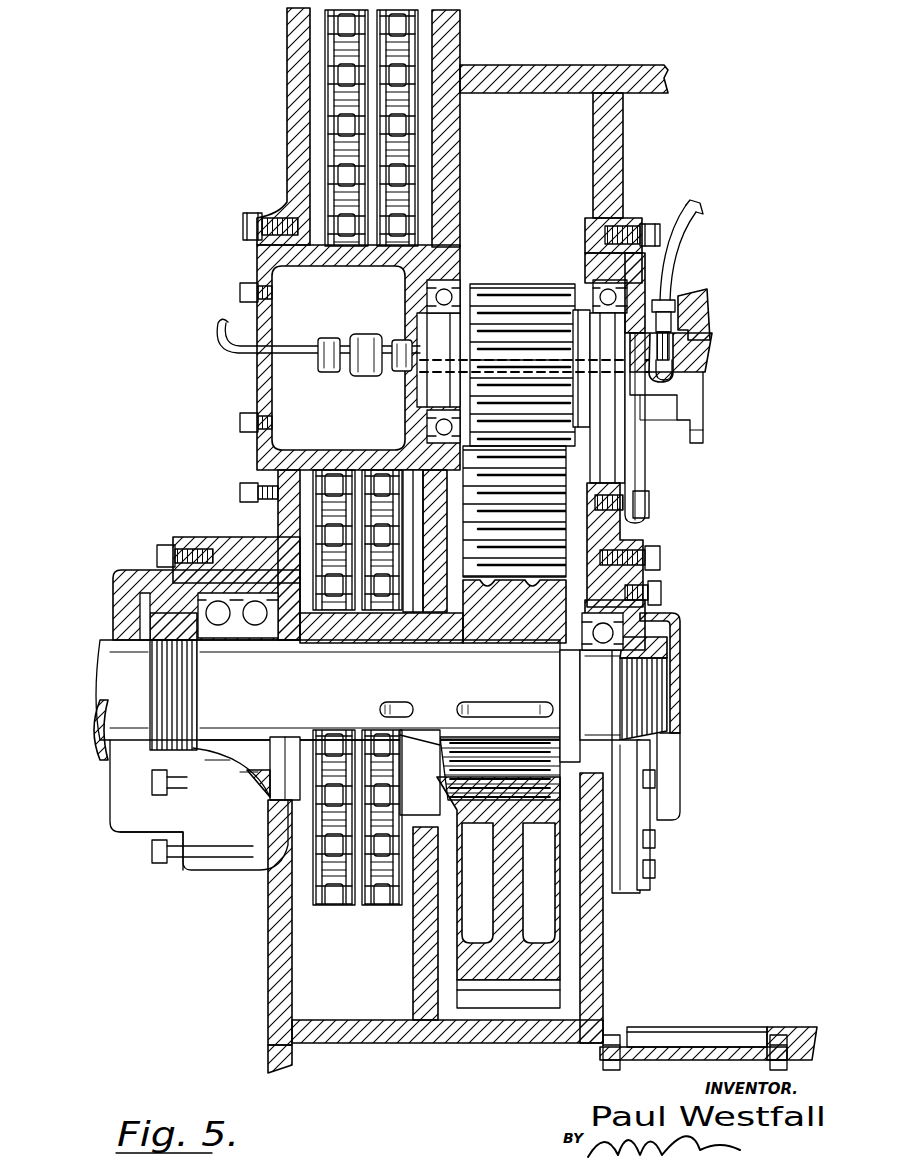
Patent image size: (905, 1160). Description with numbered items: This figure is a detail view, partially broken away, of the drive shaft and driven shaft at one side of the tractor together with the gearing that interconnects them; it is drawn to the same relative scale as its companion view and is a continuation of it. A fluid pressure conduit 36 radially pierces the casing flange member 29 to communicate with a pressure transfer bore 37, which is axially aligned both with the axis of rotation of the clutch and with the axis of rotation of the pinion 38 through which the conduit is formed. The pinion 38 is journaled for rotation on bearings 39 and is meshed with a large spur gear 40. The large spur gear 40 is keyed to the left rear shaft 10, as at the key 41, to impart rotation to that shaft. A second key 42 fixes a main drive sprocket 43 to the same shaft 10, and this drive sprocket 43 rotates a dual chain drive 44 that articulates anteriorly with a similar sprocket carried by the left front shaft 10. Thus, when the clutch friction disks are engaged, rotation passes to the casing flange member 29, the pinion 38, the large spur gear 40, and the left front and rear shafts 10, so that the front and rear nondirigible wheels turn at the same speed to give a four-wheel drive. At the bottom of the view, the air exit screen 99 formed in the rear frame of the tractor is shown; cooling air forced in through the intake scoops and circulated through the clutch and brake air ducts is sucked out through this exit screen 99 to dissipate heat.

The drive shaft 10 is at (102, 690).
The casing flange member 29 is at (706, 300).
The fluid pressure conduit 36 is at (682, 216).
The pressure transfer bore 37 is at (672, 372).
The pinion 38 is at (553, 320).
The bearings 39 is at (432, 300).
The large spur gear 40 is at (523, 964).
The key 41 is at (462, 702).
The second key 42 is at (410, 702).
The main drive sprocket 43 is at (345, 562).
The dual chain drive 44 is at (400, 165).
The air exit screen 99 is at (708, 1050).